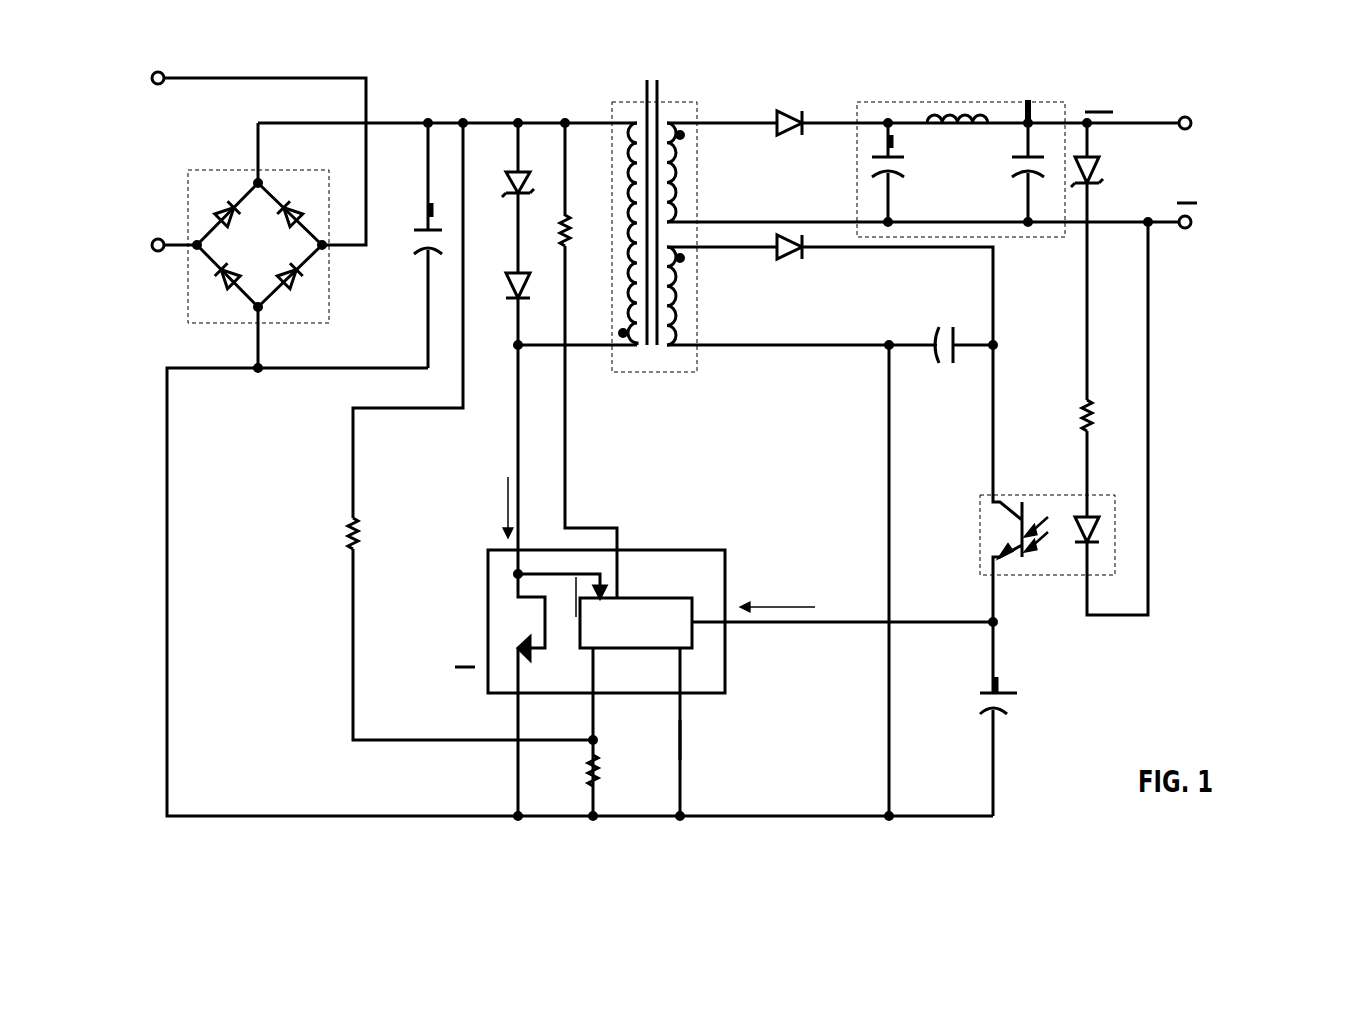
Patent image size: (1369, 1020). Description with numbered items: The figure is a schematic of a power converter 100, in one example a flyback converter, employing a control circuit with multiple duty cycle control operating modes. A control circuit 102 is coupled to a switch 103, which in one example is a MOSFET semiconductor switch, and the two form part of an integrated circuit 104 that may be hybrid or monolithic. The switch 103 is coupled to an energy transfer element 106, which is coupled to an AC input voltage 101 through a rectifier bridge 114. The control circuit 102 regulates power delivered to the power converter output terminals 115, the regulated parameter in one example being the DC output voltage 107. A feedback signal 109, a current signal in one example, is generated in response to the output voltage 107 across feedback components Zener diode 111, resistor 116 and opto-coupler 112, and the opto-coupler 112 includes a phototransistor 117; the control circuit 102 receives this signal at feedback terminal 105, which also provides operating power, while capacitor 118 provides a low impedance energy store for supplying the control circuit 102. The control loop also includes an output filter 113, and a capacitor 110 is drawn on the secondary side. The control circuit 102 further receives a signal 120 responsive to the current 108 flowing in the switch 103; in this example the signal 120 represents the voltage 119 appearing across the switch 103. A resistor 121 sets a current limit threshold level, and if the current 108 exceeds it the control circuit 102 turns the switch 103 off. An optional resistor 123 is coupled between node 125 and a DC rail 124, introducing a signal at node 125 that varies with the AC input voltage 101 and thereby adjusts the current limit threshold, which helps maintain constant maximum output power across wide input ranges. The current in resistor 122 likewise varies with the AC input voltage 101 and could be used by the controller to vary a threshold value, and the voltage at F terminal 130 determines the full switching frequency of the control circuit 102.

The power converter 100 is at (431, 35).
The AC input voltage 101 is at (150, 165).
The control circuit 102 is at (692, 648).
The switch 103 is at (512, 635).
The integrated circuit 104 is at (688, 545).
The feedback terminal 105 is at (758, 658).
The energy transfer element 106 is at (627, 100).
The DC output voltage 107 is at (1228, 167).
The current 108 is at (488, 493).
The feedback signal 109 is at (777, 592).
The capacitor 110 is at (952, 366).
The Zener diode 111 is at (1110, 162).
The opto-coupler 112 is at (1120, 508).
The output filter 113 is at (1028, 100).
The rectifier bridge 114 is at (215, 168).
The power converter output terminals 115 is at (1203, 113).
The resistor 116 is at (1103, 422).
The phototransistor 117 is at (1010, 507).
The capacitor 118 is at (1018, 702).
The voltage 119 is at (452, 600).
The signal 120 is at (588, 568).
The resistor 121 is at (583, 775).
The resistor 122 is at (555, 213).
The optional resistor 123 is at (343, 540).
The DC rail 124 is at (403, 120).
The node 125 is at (598, 742).
The F terminal 130 is at (694, 728).